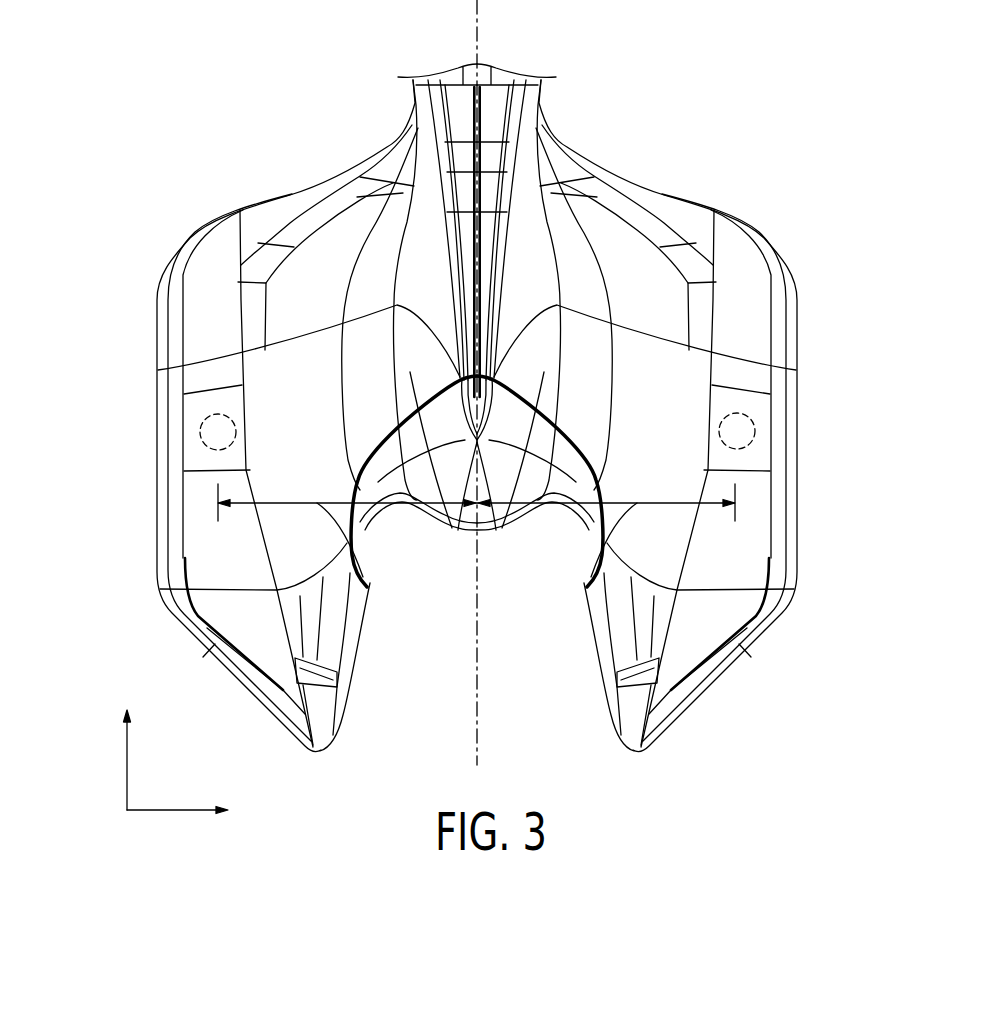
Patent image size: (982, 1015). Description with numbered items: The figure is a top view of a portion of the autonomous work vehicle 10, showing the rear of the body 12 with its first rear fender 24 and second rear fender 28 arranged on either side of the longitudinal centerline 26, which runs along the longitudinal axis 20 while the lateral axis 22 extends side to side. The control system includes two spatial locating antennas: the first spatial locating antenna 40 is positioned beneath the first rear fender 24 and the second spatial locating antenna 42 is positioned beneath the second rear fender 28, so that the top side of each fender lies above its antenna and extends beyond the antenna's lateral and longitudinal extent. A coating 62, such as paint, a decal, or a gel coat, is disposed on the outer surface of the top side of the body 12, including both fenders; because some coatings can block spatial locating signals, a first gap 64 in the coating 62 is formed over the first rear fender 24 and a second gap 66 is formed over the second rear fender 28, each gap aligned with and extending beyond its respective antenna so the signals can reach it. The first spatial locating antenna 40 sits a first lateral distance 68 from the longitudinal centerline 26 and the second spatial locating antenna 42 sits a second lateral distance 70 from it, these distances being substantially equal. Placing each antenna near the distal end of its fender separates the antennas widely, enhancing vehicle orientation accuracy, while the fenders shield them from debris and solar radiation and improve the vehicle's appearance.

The autonomous work vehicle 10 is at (150, 217).
The body 12 is at (438, 97).
The longitudinal axis 20 is at (126, 766).
The lateral axis 22 is at (170, 815).
The first rear fender 24 is at (163, 482).
The longitudinal centerline 26 is at (482, 672).
The second rear fender 28 is at (793, 482).
The first spatial locating antenna 40 is at (204, 418).
The second spatial locating antenna 42 is at (750, 418).
The coating 62 is at (208, 328).
The first gap 64 is at (223, 405).
The second gap 66 is at (747, 407).
The first lateral distance 68 is at (343, 539).
The second lateral distance 70 is at (607, 538).